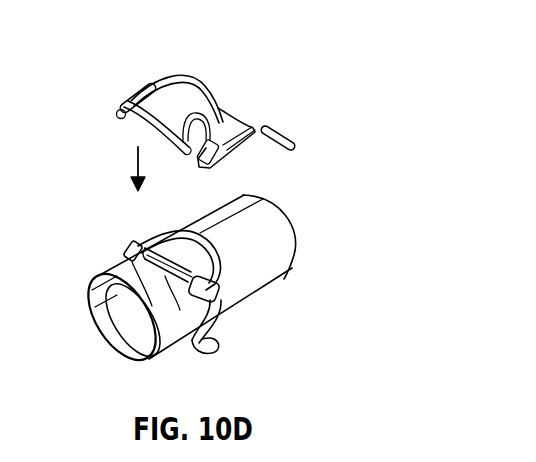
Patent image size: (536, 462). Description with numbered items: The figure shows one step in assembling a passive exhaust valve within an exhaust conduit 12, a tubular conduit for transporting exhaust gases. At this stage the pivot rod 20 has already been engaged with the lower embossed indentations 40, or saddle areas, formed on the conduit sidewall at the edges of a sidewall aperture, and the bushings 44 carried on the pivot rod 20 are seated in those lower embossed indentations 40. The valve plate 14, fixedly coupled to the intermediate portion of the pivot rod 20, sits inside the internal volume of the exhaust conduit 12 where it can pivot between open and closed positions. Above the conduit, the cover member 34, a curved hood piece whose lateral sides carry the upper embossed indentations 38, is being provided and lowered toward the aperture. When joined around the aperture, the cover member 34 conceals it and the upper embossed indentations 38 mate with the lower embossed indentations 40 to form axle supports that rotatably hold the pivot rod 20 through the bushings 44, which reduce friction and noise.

The exhaust conduit 12 is at (278, 231).
The valve plate 14 is at (138, 327).
The pivot rod 20 is at (220, 302).
The cover member 34 is at (172, 102).
The upper embossed indentations 38 is at (128, 98).
The lower embossed indentations 40 is at (200, 298).
The bushings 44 is at (138, 242).